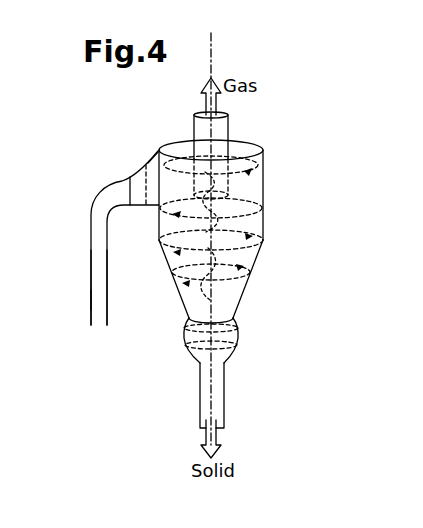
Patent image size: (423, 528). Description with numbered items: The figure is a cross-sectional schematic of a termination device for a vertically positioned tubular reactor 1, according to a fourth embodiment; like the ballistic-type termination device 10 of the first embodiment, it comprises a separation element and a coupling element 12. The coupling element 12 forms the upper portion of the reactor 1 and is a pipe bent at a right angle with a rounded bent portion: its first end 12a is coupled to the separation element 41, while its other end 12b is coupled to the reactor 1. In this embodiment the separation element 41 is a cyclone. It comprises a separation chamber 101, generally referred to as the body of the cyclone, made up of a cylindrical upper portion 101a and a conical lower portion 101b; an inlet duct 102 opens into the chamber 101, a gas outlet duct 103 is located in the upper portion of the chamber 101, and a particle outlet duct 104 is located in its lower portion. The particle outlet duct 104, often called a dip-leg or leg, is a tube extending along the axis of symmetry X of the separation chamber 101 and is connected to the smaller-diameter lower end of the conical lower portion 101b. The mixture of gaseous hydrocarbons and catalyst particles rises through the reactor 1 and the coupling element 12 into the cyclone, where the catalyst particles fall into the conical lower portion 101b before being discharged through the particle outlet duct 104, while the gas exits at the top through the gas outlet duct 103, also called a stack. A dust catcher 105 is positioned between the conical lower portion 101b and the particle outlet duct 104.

The tubular reactor 1 is at (91, 295).
The termination device 10 is at (50, 282).
The coupling element 12 is at (104, 200).
The first end 12a is at (129, 182).
The other end 12b is at (97, 256).
The separation element 41 is at (283, 160).
The separation chamber 101 is at (370, 218).
The cylindrical upper portion 101a is at (264, 205).
The conical lower portion 101b is at (247, 284).
The inlet duct 102 is at (153, 157).
The gas outlet duct 103 is at (229, 130).
The particle outlet duct 104 is at (225, 392).
The dust catcher 105 is at (240, 333).
The axis of symmetry X is at (213, 62).